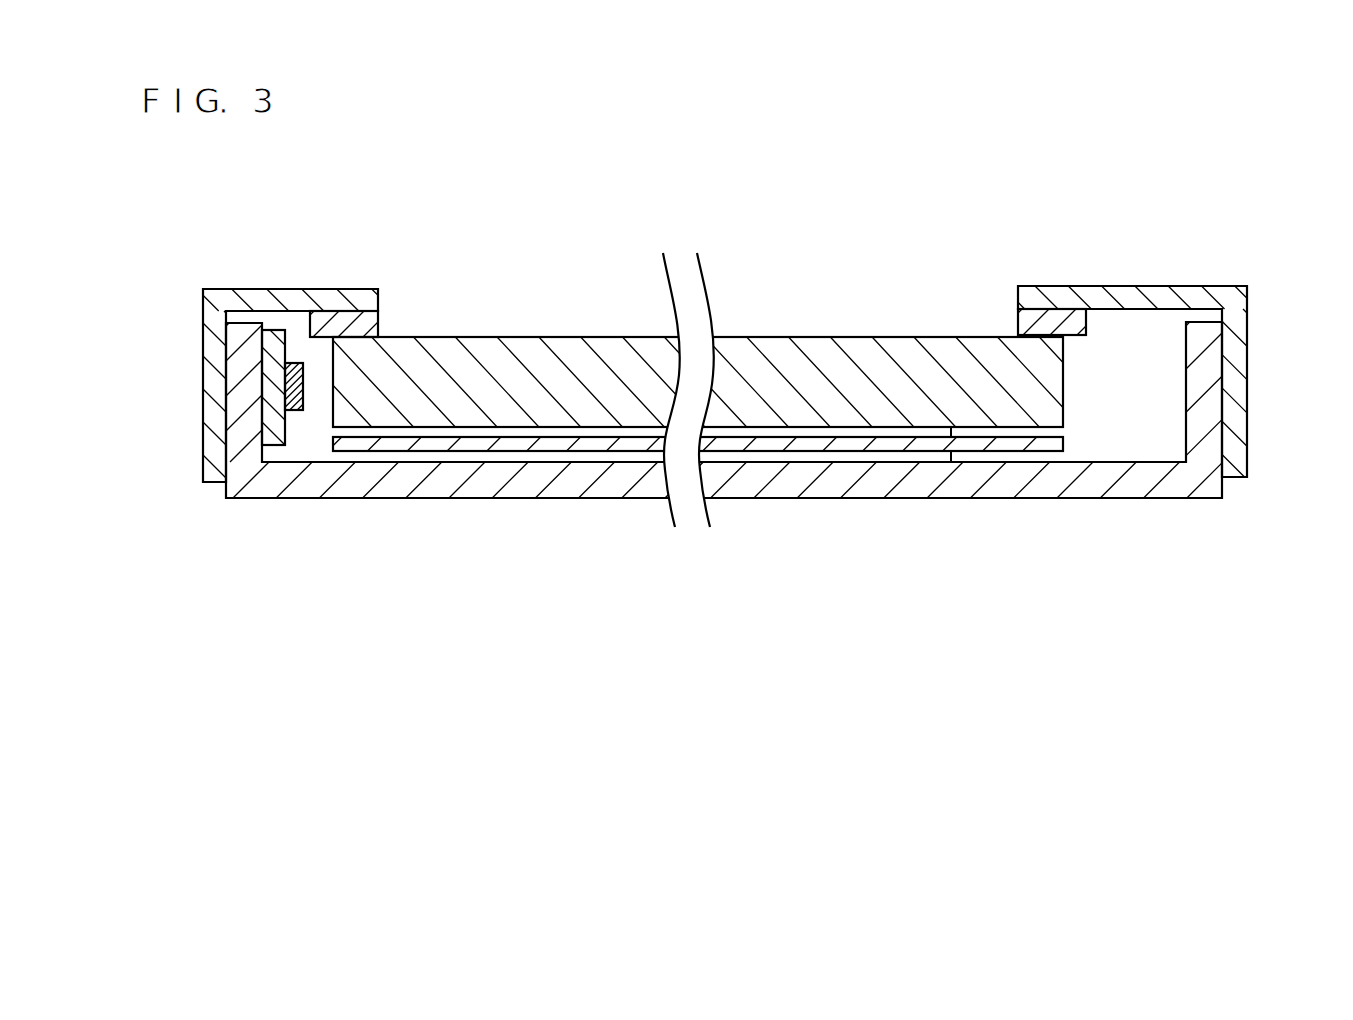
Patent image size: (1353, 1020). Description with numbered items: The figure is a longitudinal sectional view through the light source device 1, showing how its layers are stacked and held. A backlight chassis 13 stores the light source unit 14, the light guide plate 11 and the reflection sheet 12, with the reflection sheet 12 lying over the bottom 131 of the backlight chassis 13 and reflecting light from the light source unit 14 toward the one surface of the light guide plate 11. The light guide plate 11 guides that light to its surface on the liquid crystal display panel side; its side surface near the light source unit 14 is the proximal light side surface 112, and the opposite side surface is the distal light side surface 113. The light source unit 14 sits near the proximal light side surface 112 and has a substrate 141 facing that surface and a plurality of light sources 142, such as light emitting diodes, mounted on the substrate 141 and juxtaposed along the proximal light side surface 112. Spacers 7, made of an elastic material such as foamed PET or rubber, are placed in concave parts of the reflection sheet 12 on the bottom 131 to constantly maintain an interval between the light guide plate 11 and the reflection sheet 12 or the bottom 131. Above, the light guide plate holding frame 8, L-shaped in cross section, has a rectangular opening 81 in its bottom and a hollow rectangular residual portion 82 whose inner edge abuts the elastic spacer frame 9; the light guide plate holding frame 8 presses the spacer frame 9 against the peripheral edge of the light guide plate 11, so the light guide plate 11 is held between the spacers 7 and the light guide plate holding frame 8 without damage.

The light source device 1 is at (720, 425).
The spacer 7 is at (958, 455).
The light guide plate holding frame 8 is at (699, 384).
The opening 81 is at (400, 290).
The residual portion 82 is at (320, 288).
The spacer frame 9 is at (380, 320).
The light guide plate 11 is at (817, 461).
The proximal light side surface 112 is at (335, 410).
The distal light side surface 113 is at (1063, 413).
The reflection sheet 12 is at (993, 443).
The backlight chassis 13 is at (724, 460).
The bottom 131 is at (1180, 461).
The light source unit 14 is at (266, 487).
The substrate 141 is at (270, 446).
The light source 142 is at (300, 412).